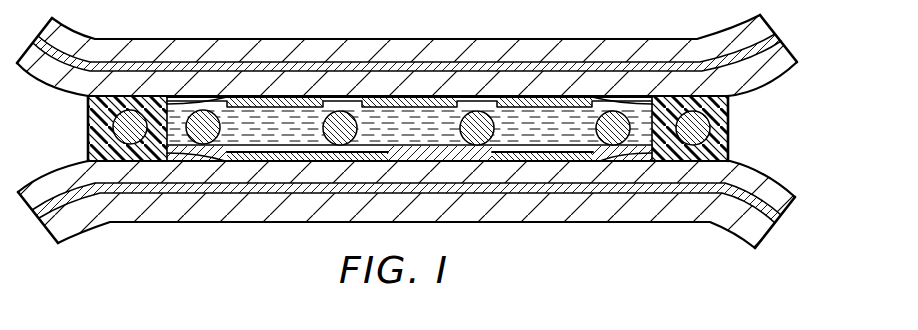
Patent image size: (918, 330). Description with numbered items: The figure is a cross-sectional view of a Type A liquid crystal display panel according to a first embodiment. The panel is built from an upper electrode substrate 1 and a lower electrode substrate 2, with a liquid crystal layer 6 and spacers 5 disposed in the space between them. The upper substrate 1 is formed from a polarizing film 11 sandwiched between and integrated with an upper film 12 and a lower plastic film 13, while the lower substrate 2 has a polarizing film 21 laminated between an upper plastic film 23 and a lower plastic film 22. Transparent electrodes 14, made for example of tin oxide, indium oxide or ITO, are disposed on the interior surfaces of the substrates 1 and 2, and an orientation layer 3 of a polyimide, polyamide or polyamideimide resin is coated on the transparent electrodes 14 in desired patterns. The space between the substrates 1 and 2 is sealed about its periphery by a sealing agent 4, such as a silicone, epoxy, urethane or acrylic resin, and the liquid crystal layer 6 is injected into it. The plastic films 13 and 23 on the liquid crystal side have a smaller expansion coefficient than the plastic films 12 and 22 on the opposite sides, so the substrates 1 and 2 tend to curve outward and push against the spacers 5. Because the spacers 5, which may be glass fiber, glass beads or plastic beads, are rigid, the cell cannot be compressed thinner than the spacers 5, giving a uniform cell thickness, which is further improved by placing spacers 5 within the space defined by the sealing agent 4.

The upper electrode substrate 1 is at (446, 48).
The lower electrode substrate 2 is at (446, 225).
The orientation layer 3 is at (621, 142).
The sealing agent 4 is at (113, 158).
The spacers 5 is at (290, 141).
The liquid crystal layer 6 is at (238, 136).
The polarizing film 11 is at (781, 42).
The upper film 12 is at (766, 23).
The lower plastic film 13 is at (429, 68).
The transparent electrodes 14 is at (566, 100).
The polarizing film 21 is at (781, 214).
The lower plastic film 22 is at (438, 230).
The upper plastic film 23 is at (790, 195).